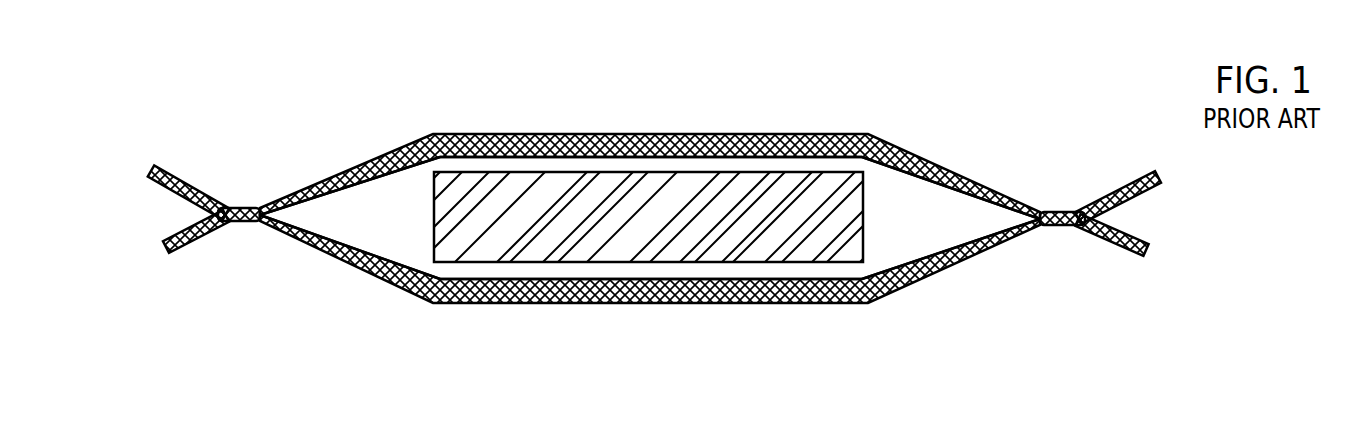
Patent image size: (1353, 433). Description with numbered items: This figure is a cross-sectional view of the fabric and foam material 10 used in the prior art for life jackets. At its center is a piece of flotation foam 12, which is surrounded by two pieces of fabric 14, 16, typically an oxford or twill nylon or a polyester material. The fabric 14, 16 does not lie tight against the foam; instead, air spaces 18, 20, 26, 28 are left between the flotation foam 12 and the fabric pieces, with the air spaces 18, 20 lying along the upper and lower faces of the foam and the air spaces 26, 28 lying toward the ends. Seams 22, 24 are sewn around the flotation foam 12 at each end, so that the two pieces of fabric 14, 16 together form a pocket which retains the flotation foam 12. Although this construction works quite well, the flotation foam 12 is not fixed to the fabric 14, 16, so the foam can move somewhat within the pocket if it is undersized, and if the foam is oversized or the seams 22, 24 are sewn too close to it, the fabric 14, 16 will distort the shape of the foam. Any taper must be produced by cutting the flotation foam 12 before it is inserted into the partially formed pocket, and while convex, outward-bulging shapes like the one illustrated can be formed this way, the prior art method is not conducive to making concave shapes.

The fabric and foam material 10 is at (508, 103).
The flotation foam 12 is at (586, 190).
The fabric 14 is at (688, 143).
The fabric 16 is at (670, 288).
The air space 18 is at (788, 168).
The air space 20 is at (830, 270).
The seam 22 is at (243, 207).
The seam 24 is at (1060, 213).
The air space 26 is at (335, 215).
The air space 28 is at (983, 217).